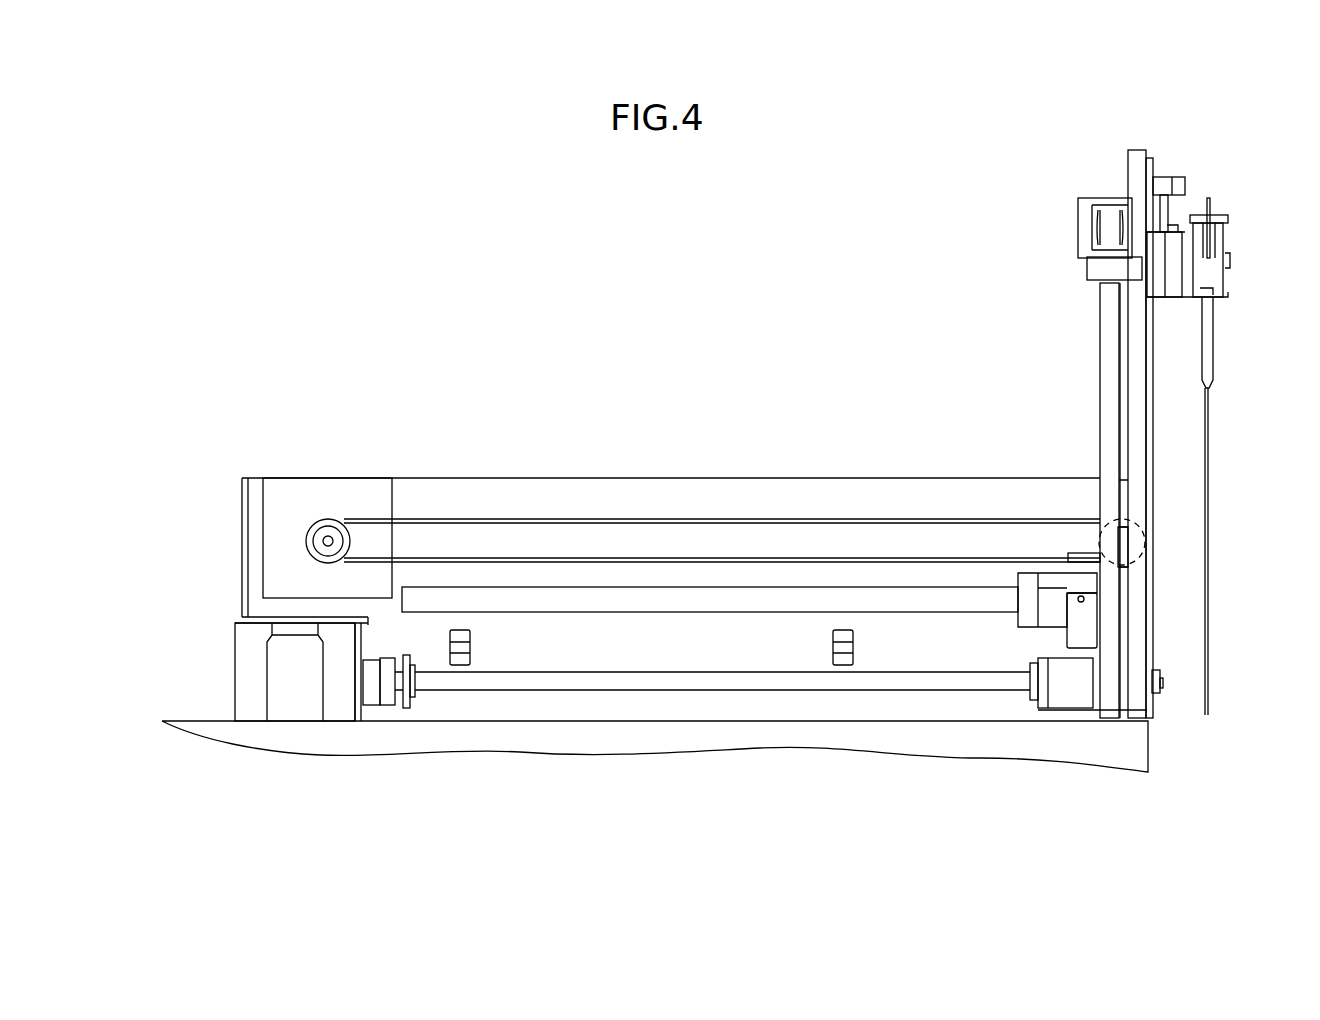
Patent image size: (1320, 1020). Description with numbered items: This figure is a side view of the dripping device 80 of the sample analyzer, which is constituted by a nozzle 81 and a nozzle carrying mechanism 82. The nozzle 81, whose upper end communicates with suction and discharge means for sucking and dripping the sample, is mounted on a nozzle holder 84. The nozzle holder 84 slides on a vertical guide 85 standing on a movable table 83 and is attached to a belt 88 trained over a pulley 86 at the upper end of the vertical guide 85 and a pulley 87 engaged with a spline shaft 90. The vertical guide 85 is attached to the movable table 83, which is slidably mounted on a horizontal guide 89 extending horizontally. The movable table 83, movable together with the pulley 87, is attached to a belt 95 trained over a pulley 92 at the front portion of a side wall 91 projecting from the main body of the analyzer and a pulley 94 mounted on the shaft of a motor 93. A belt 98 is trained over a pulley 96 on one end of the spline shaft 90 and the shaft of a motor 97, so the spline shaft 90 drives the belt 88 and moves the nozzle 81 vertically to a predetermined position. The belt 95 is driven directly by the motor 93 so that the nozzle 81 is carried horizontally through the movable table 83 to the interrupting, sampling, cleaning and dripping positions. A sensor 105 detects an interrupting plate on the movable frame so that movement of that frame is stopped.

The dripping device 80 is at (1210, 108).
The nozzle 81 is at (1210, 435).
The nozzle carrying mechanism 82 is at (736, 326).
The movable table 83 is at (1088, 618).
The nozzle holder 84 is at (1232, 290).
The vertical guide 85 is at (1153, 398).
The pulley 86 is at (1098, 228).
The pulley 87 is at (1090, 715).
The belt 88 is at (1105, 337).
The horizontal guide 89 is at (748, 610).
The spline shaft 90 is at (953, 690).
The side wall 91 is at (935, 490).
The pulley 92 is at (1112, 530).
The motor 93 is at (375, 488).
The pulley 94 is at (326, 528).
The belt 95 is at (785, 518).
The pulley 96 is at (392, 700).
The motor 97 is at (240, 652).
The belt 98 is at (372, 700).
The sensor 105 is at (462, 630).